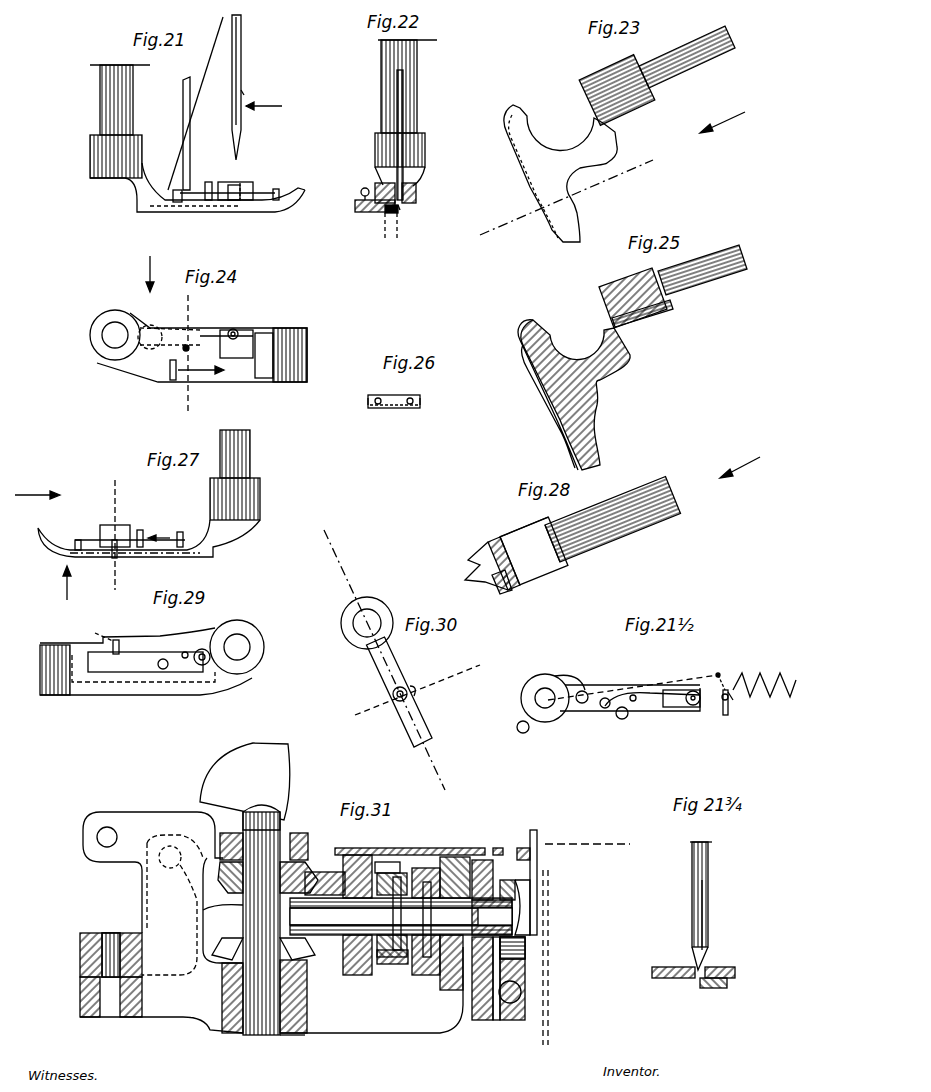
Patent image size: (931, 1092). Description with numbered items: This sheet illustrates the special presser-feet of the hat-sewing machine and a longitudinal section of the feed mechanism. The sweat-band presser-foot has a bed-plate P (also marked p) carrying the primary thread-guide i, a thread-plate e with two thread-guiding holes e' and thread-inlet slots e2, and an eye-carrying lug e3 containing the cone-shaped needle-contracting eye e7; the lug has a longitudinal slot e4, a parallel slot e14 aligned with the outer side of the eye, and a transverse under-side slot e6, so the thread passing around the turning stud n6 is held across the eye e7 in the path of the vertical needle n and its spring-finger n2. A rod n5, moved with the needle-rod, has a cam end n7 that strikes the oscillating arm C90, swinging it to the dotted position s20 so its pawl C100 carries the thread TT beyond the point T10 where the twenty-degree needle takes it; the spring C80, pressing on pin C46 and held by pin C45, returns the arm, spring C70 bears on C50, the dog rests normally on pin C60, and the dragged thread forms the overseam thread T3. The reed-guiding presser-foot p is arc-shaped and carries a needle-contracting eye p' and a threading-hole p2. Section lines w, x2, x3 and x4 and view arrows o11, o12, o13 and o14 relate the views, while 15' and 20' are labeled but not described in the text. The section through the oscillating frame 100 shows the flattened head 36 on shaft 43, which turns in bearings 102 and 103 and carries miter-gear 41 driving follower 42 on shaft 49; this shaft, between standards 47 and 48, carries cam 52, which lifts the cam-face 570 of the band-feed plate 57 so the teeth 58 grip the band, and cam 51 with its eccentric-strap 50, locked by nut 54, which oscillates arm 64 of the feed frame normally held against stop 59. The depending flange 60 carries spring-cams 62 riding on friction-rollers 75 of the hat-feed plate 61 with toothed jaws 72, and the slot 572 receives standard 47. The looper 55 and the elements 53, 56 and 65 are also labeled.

In FIG. 21, the presser bar 15' is at (125, 100).
In FIG. 22, the presser bar 15' is at (409, 120).
In FIG. 27, the presser bar 15' is at (246, 475).
In FIG. 21, the bed-plate P is at (90, 157).
In FIG. 21, the presser-foot p is at (197, 190).
In FIG. 22, the presser-foot p is at (365, 215).
In FIG. 24, the presser-foot p is at (198, 353).
In FIG. 25, the presser-foot p is at (548, 395).
In FIG. 28, the presser-foot p is at (470, 574).
In FIG. 27, the presser-foot p is at (149, 538).
In FIG. 29, the presser-foot p is at (152, 668).
In FIG. 30, the presser-foot p is at (386, 672).
The presser-foot p is at (709, 967).
In FIG. 23, the needle-contracting eye p' is at (566, 173).
In FIG. 25, the needle-contracting eye p' is at (585, 395).
In FIG. 28, the needle-contracting eye p' is at (526, 556).
In FIG. 28, the initial threading-hole p2 is at (500, 592).
In FIG. 30, the initial threading-hole p2 is at (413, 694).
In FIG. 21, the needle n is at (241, 44).
In FIG. 31, the needle n is at (540, 835).
In FIG. 21, the spring-finger n2 is at (250, 88).
The spring-finger n2 is at (730, 708).
In FIG. 21, the cam-carrying rod n5 is at (189, 183).
In FIG. 29, the cam-carrying rod n5 is at (163, 670).
In FIG. 21, the turning stud n6 is at (210, 182).
In FIG. 27, the turning stud n6 is at (141, 530).
The cam end n7 is at (708, 950).
In FIG. 21, the primary thread-guide i is at (185, 187).
In FIG. 24, the primary thread-guide i is at (187, 355).
In FIG. 27, the primary thread-guide i is at (181, 529).
In FIG. 21, the thread-plate e is at (234, 144).
In FIG. 22, the thread-plate e is at (357, 186).
In FIG. 24, the thread-plate e is at (248, 321).
In FIG. 26, the thread-plate e is at (394, 391).
In FIG. 27, the thread-plate e is at (130, 531).
In FIG. 26, the thread-guiding holes e' is at (396, 410).
In FIG. 26, the thread-inlet slots e2 is at (368, 401).
In FIG. 21, the eye-carrying lug e3 is at (250, 183).
In FIG. 27, the eye-carrying lug e3 is at (133, 531).
In FIG. 24, the longitudinal slot e4 is at (272, 330).
In FIG. 29, the longitudinal slot e4 is at (145, 663).
In FIG. 22, the transverse slot e6 is at (410, 201).
In FIG. 27, the transverse slot e6 is at (113, 558).
In FIG. 29, the transverse slot e6 is at (118, 640).
In FIG. 21, the needle-contracting eye e7 is at (233, 184).
In FIG. 22, the needle-contracting eye e7 is at (390, 185).
In FIG. 24, the needle-contracting eye e7 is at (240, 330).
In FIG. 24, the second slot e14 is at (229, 330).
In FIG. 24, the section line w is at (185, 355).
In FIG. 27, the view arrow o11 is at (37, 485).
In FIG. 24, the view arrow o12 is at (153, 264).
In FIG. 27, the view arrow o13 is at (54, 583).
In FIG. 23, the view arrows o14 is at (722, 114).
In FIG. 25, the view arrows o14 is at (740, 451).
In FIG. 27, the section line x2 is at (111, 532).
In FIG. 30, the section line x3 is at (376, 656).
In FIG. 31, the section line x3 is at (446, 786).
In FIG. 30, the section line x4 is at (414, 688).
In FIG. 23, the presser foot shank tube 20' is at (657, 75).
In FIG. 25, the presser foot shank tube 20' is at (673, 286).
In FIG. 28, the presser foot shank tube 20' is at (590, 521).
In FIG. 29, the dotted position line s20 is at (90, 630).
The dotted position line s20 is at (720, 675).
The pin C45 is at (523, 733).
The pin C46 is at (586, 694).
The spring-bearing member C50 is at (636, 696).
The pin C60 is at (680, 690).
The spring C70 is at (630, 690).
In FIG. 29, the spring C80 is at (205, 665).
The spring C80 is at (565, 684).
In FIG. 22, the oscillating arm C90 is at (385, 227).
In FIG. 29, the oscillating arm C90 is at (200, 650).
In FIG. 22, the pawl C100 is at (400, 206).
The pawl C100 is at (697, 705).
The thread-taking point T10 is at (720, 673).
The overseam thread T3 is at (733, 700).
The thread TT is at (733, 712).
In FIG. 31, the flattened head 36 is at (245, 781).
In FIG. 31, the miter-gear 41 is at (310, 862).
In FIG. 31, the follower 42 is at (305, 958).
In FIG. 31, the shaft 43 is at (265, 1035).
In FIG. 31, the standard 47 is at (440, 975).
In FIG. 31, the standard 48 is at (375, 975).
In FIG. 31, the shaft 49 is at (401, 916).
In FIG. 31, the eccentric-strap 50 is at (392, 862).
In FIG. 31, the cam 51 is at (425, 868).
In FIG. 31, the cam 52 is at (403, 963).
In FIG. 31, the pin 53 is at (393, 915).
In FIG. 31, the locking-nut 54 is at (431, 915).
In FIG. 31, the looper 55 is at (535, 894).
In FIG. 31, the socket 56 is at (515, 913).
In FIG. 31, the band-feed plate 57 is at (540, 864).
In FIG. 31, the cam-face 570 is at (440, 860).
In FIG. 31, the rectangular slot 572 is at (470, 870).
In FIG. 31, the teeth 58 is at (500, 848).
In FIG. 31, the fixed stop 59 is at (455, 857).
In FIG. 31, the depending plate flange 60 is at (483, 1020).
In FIG. 31, the hat-feed plate 61 is at (518, 1020).
In FIG. 31, the spring-cams 62 is at (497, 1020).
In FIG. 31, the arm 64 is at (318, 872).
In FIG. 31, the lower bearing 65 is at (236, 960).
In FIG. 31, the toothed jaws 72 is at (520, 880).
In FIG. 31, the friction-rollers 75 is at (521, 993).
In FIG. 31, the oscillating frame 100 is at (165, 1015).
In FIG. 31, the bearings 102 is at (298, 832).
In FIG. 31, the bearing 103 is at (292, 1035).